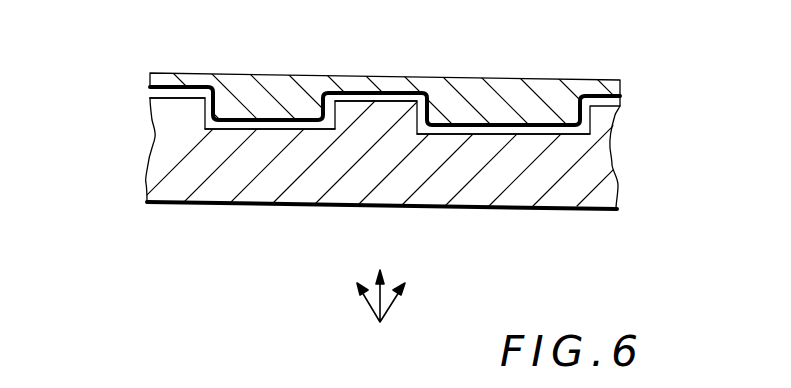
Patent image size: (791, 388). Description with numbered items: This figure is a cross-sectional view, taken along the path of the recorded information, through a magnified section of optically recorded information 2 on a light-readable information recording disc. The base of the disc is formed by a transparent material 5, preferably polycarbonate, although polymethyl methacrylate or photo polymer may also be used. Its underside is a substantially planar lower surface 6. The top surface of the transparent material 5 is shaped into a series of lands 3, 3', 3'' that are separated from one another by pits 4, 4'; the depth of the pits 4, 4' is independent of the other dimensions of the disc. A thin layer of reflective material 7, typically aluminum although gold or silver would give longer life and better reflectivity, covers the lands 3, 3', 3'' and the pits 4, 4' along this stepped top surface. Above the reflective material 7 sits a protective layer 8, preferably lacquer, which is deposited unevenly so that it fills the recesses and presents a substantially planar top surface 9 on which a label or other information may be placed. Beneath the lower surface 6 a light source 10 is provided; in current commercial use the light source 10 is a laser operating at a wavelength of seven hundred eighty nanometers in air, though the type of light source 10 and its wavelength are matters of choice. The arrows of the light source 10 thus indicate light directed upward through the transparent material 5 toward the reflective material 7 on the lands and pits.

The optically recorded information 2 is at (150, 125).
The land 3 is at (405, 120).
The land 3' is at (351, 172).
The land 3'' is at (140, 151).
The pit 4 is at (505, 194).
The pit 4' is at (269, 184).
The transparent material 5 is at (397, 195).
The lower surface 6 is at (468, 206).
The reflective material 7 is at (205, 73).
The protective layer 8 is at (518, 93).
The top surface 9 is at (390, 75).
The light source 10 is at (384, 325).